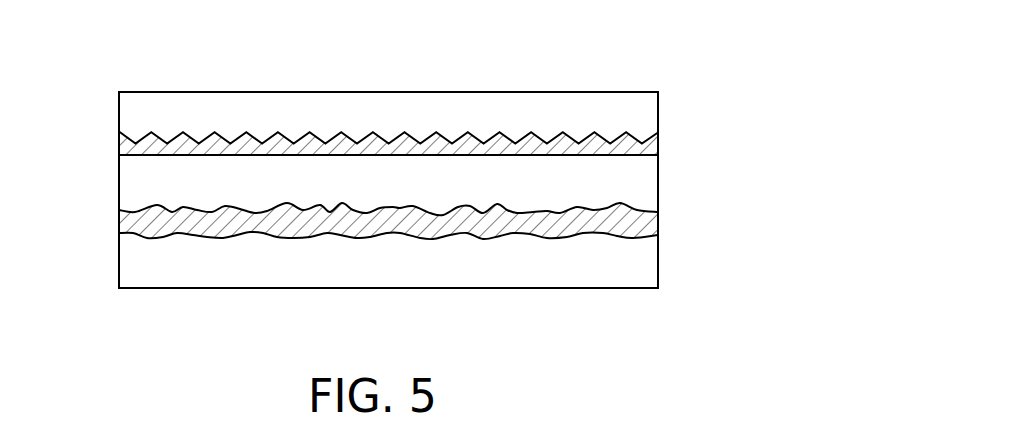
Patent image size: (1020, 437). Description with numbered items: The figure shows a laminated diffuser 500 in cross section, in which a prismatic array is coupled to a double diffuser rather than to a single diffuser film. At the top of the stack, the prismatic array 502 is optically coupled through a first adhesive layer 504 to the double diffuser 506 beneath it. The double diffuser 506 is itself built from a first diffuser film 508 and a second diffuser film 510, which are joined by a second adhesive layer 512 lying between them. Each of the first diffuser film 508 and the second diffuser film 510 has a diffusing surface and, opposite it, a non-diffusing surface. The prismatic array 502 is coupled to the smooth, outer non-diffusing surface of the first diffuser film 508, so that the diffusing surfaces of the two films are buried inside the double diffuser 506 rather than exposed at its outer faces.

The laminated diffuser 500 is at (381, 146).
The prismatic array 502 is at (648, 98).
The first adhesive layer 504 is at (655, 140).
The double diffuser 506 is at (379, 215).
The first diffuser film 508 is at (648, 190).
The second diffuser film 510 is at (648, 277).
The second adhesive layer 512 is at (127, 217).